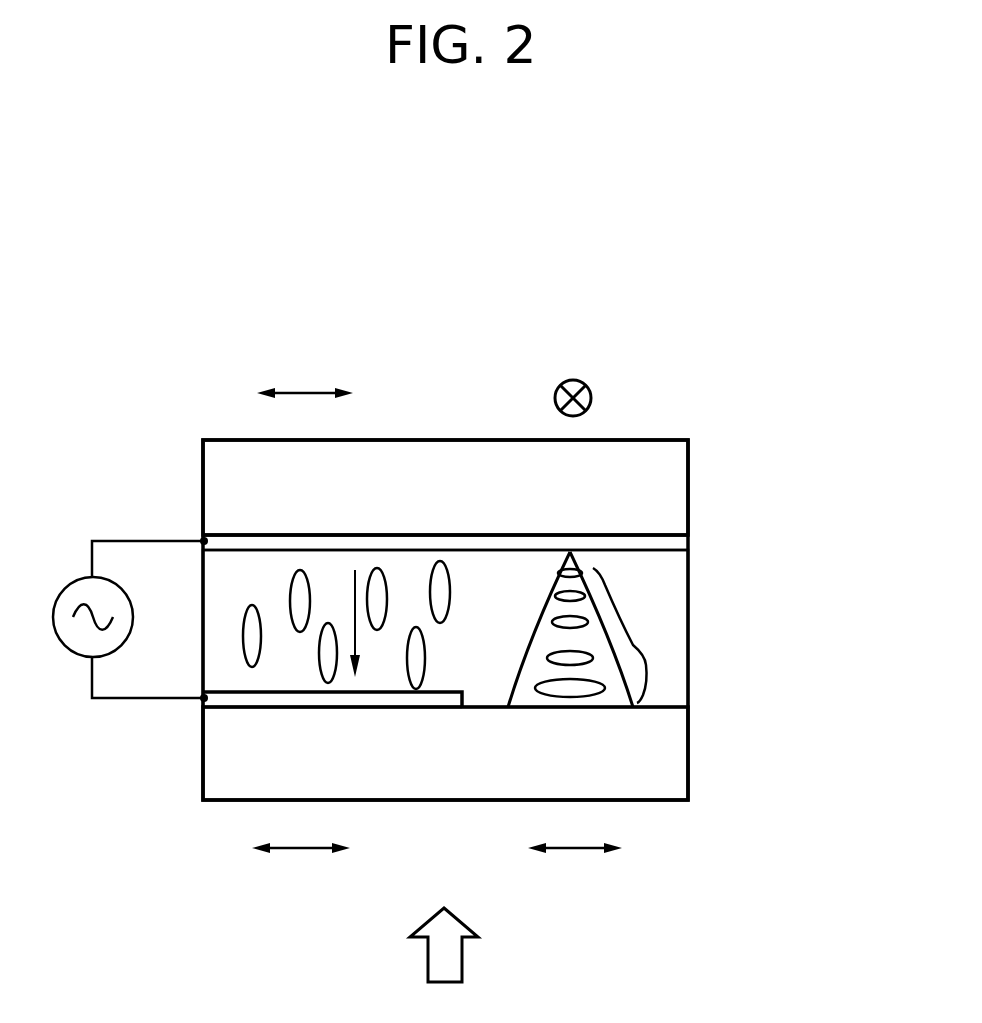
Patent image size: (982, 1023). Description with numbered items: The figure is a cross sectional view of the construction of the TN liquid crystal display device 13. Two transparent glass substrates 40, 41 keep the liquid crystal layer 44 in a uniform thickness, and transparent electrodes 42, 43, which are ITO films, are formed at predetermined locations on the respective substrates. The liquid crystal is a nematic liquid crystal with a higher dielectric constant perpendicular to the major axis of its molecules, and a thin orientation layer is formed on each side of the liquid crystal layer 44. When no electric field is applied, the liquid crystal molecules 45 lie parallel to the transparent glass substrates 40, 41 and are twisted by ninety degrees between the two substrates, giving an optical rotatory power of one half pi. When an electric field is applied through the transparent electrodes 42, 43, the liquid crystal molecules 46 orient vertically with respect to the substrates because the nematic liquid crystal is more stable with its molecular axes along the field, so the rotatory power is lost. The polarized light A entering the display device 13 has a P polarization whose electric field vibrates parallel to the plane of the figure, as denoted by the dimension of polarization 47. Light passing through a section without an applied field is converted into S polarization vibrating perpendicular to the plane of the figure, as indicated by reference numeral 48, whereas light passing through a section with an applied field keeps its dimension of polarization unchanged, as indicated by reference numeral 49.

The TN liquid crystal display device 13 is at (752, 640).
The transparent glass substrate 40 is at (690, 758).
The transparent glass substrate 41 is at (690, 468).
The transparent electrode 42 is at (243, 710).
The transparent electrode 43 is at (242, 535).
The liquid crystal layer 44 is at (667, 578).
The liquid crystal molecules 45 is at (640, 645).
The liquid crystal molecules 46 is at (320, 668).
The dimension of polarization of striking light 47 is at (298, 848).
The S polarization 48 is at (573, 378).
The unchanged dimension of polarization 49 is at (305, 393).
The polarized light A is at (462, 962).